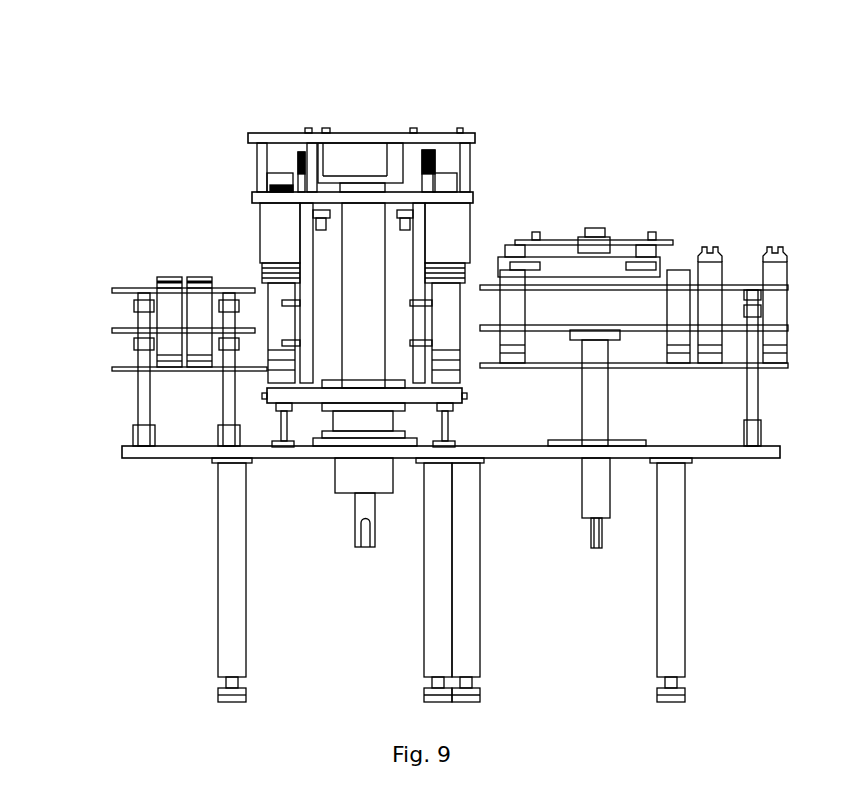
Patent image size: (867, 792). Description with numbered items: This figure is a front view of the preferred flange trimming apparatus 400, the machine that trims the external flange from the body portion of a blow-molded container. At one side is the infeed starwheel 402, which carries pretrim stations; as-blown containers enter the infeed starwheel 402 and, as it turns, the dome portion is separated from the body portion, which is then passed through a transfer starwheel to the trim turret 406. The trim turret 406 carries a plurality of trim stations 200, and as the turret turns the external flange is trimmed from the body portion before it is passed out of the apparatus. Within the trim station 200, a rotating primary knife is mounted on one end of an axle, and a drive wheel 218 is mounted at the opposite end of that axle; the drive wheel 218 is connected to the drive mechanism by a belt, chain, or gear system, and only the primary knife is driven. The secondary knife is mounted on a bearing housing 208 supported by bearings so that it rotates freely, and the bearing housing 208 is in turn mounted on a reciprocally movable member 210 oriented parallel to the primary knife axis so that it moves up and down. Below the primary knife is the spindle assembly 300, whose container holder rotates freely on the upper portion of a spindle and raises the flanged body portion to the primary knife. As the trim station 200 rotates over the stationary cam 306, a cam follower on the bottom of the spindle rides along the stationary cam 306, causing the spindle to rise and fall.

The flange trimming apparatus 400 is at (85, 345).
The infeed starwheel 402 is at (642, 197).
The trim station 200 is at (346, 236).
The drive wheel 218 is at (231, 138).
The movable member 210 is at (310, 258).
The trim turret 406 is at (402, 239).
The bearing housing 208 is at (432, 272).
The spindle assembly 300 is at (262, 444).
The stationary cam 306 is at (262, 499).